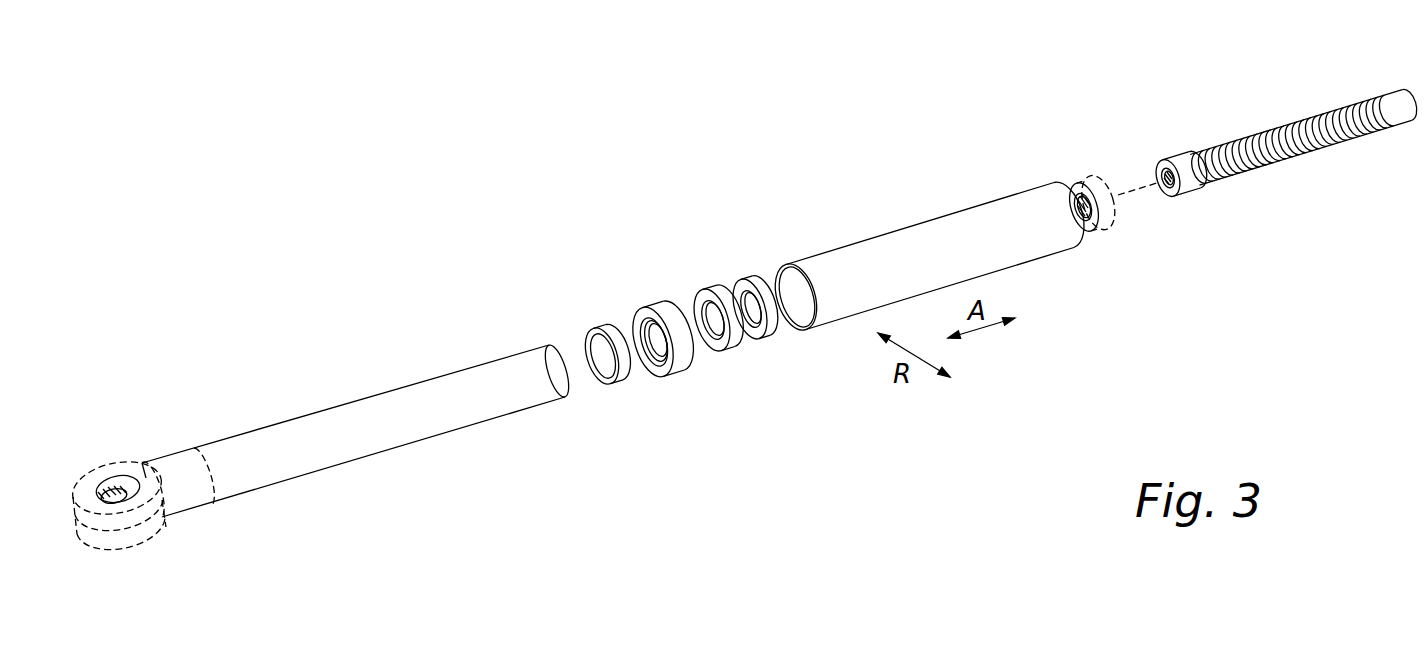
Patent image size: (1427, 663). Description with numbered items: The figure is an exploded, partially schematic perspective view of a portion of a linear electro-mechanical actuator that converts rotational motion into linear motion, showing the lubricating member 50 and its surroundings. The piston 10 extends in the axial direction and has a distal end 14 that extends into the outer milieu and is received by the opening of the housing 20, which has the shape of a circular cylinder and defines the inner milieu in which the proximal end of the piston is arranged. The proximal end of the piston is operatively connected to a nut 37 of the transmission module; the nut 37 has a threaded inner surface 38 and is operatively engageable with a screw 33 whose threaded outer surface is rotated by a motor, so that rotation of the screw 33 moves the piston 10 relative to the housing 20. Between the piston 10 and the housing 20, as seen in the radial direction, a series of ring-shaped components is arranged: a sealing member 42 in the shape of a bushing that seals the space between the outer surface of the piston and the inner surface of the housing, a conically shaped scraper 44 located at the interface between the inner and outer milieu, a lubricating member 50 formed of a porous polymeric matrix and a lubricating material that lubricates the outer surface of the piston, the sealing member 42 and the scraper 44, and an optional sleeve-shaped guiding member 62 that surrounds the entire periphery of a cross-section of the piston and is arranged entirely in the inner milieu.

The piston 10 is at (172, 468).
The distal end 14 is at (138, 542).
The housing 20 is at (857, 257).
The screw 33 is at (1262, 130).
The nut 37 is at (1108, 217).
The threaded inner surface 38 is at (1082, 233).
The sealing member 42 is at (677, 373).
The scraper 44 is at (590, 327).
The lubricating member 50 is at (735, 343).
The guiding member 62 is at (778, 337).